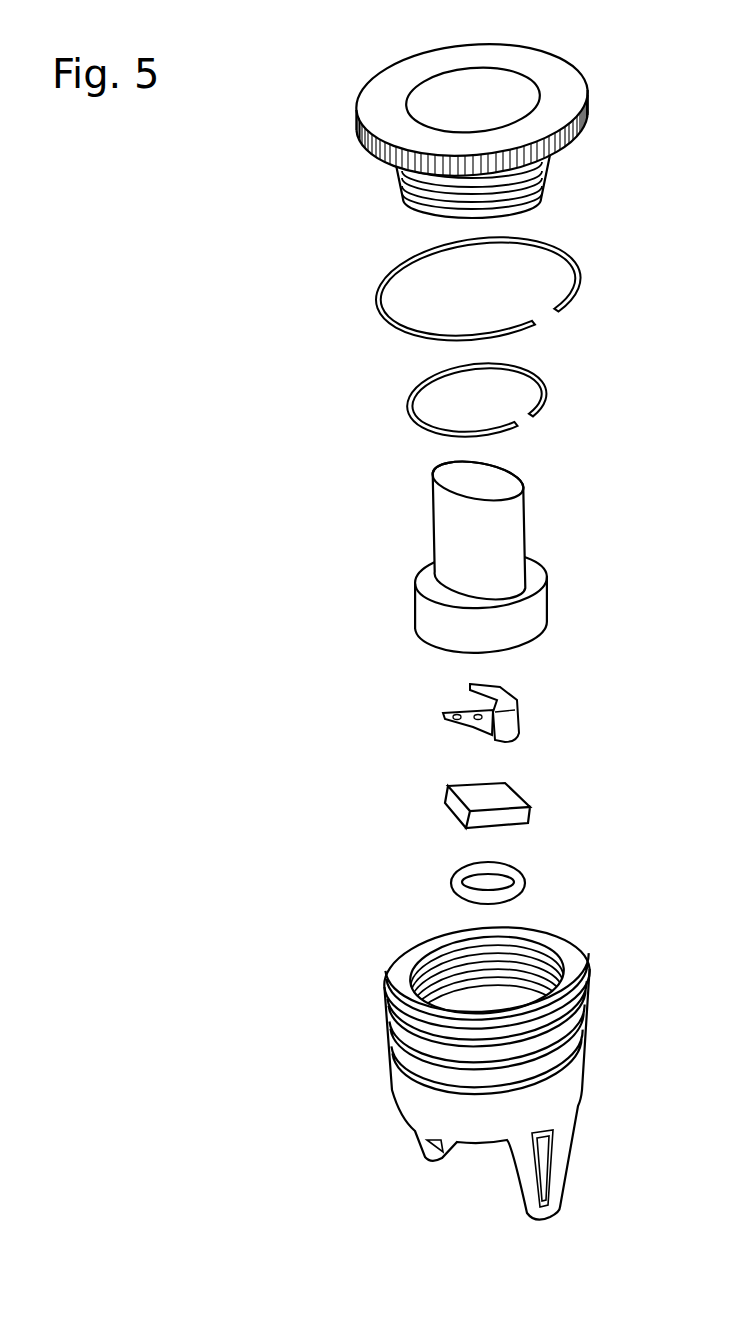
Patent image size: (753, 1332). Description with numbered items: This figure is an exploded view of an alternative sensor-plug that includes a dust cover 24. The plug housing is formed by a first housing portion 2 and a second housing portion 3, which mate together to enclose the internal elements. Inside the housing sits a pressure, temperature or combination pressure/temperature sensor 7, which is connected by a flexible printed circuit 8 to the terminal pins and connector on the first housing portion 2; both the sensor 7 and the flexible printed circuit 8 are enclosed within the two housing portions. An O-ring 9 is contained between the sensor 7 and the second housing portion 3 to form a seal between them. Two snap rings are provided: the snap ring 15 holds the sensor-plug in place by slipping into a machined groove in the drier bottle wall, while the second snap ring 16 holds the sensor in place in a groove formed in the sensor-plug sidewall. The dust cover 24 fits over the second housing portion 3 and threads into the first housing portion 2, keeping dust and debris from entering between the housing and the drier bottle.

The dust cover 24 is at (563, 108).
The snap ring 15 is at (380, 308).
The second snap ring 16 is at (408, 411).
The second housing portion 3 is at (428, 538).
The flexible printed circuit 8 is at (515, 700).
The sensor 7 is at (448, 808).
The O-ring 9 is at (517, 867).
The first housing portion 2 is at (587, 963).